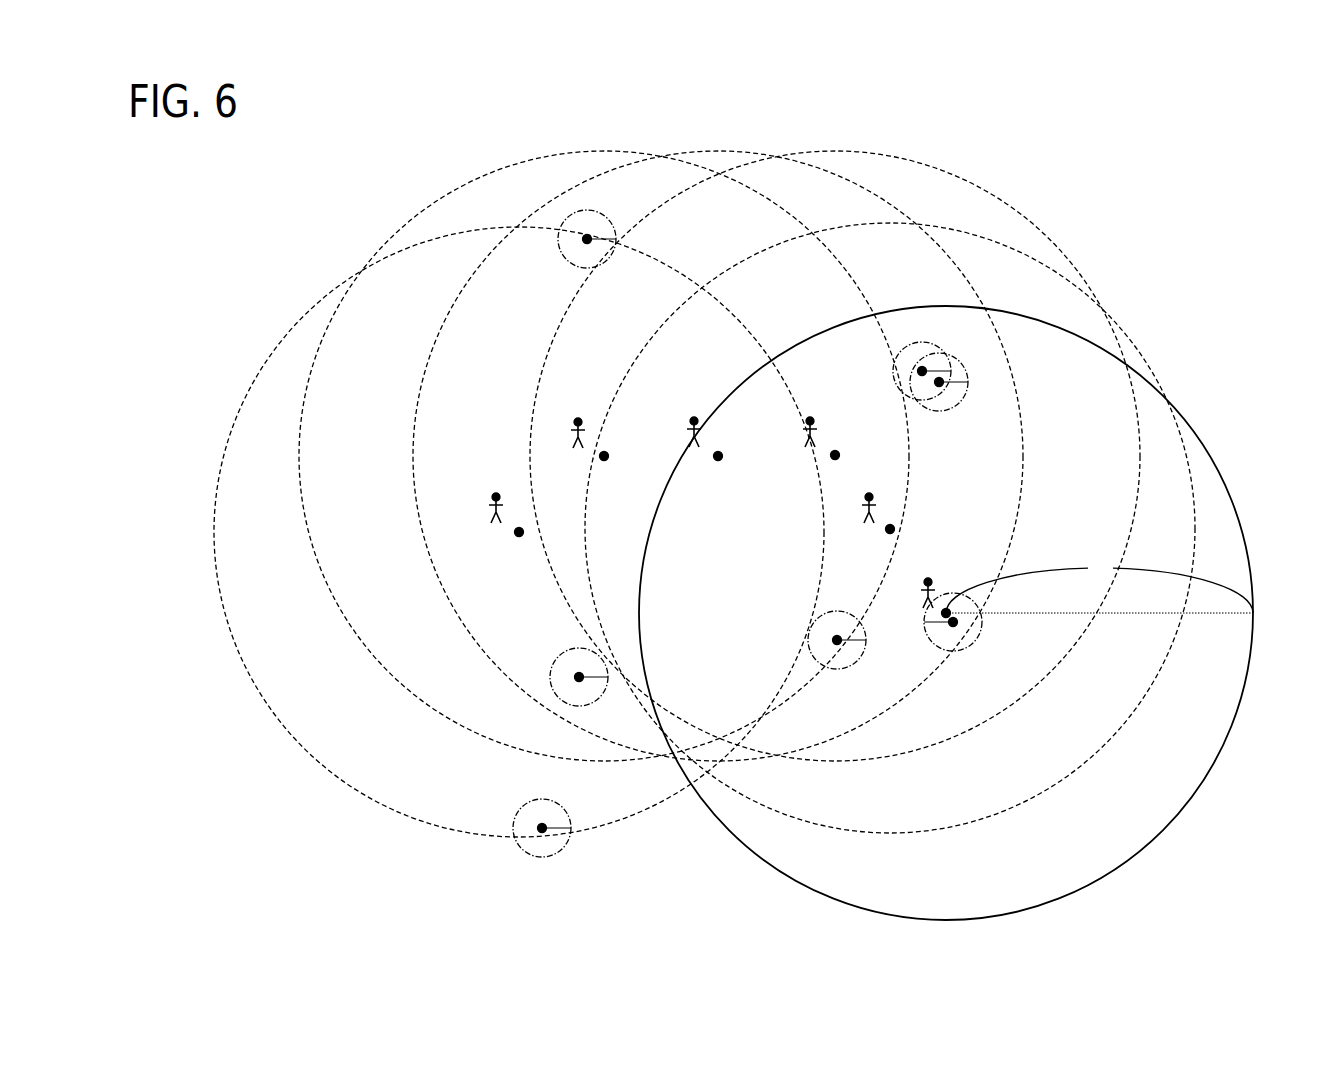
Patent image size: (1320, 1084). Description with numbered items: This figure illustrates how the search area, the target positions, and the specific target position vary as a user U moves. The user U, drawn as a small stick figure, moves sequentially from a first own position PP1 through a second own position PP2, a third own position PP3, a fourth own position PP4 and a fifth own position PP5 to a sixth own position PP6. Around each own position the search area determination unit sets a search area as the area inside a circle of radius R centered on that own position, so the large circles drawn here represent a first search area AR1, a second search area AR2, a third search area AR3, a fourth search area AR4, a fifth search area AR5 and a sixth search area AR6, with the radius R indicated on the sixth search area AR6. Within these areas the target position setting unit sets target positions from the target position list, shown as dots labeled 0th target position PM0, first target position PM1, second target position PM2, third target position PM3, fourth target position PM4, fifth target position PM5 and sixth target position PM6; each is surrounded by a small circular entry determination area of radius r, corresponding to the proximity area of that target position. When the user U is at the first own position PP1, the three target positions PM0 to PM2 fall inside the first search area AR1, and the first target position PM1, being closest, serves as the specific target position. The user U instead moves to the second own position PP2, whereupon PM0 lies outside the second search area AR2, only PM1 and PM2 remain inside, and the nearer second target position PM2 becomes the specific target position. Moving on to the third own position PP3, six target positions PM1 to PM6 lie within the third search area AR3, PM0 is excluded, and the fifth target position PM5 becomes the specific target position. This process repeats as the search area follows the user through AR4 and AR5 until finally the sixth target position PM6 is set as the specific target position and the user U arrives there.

The first search area AR1 is at (297, 321).
The second search area AR2 is at (458, 187).
The third search area AR3 is at (716, 148).
The fourth search area AR4 is at (982, 186).
The fifth search area AR5 is at (1142, 355).
The sixth search area AR6 is at (1213, 460).
The 0th target position PM0 is at (542, 833).
The first target position PM1 is at (577, 673).
The second target position PM2 is at (585, 243).
The third target position PM3 is at (918, 371).
The fourth target position PM4 is at (939, 387).
The fifth target position PM5 is at (833, 639).
The sixth target position PM6 is at (956, 626).
The first own position PP1 is at (518, 537).
The second own position PP2 is at (605, 461).
The third own position PP3 is at (719, 461).
The fourth own position PP4 is at (835, 451).
The fifth own position PP5 is at (895, 529).
The sixth own position PP6 is at (947, 609).
The user U is at (496, 493).
The radius of search area R is at (1099, 583).
The radius of entry determination area r is at (571, 827).